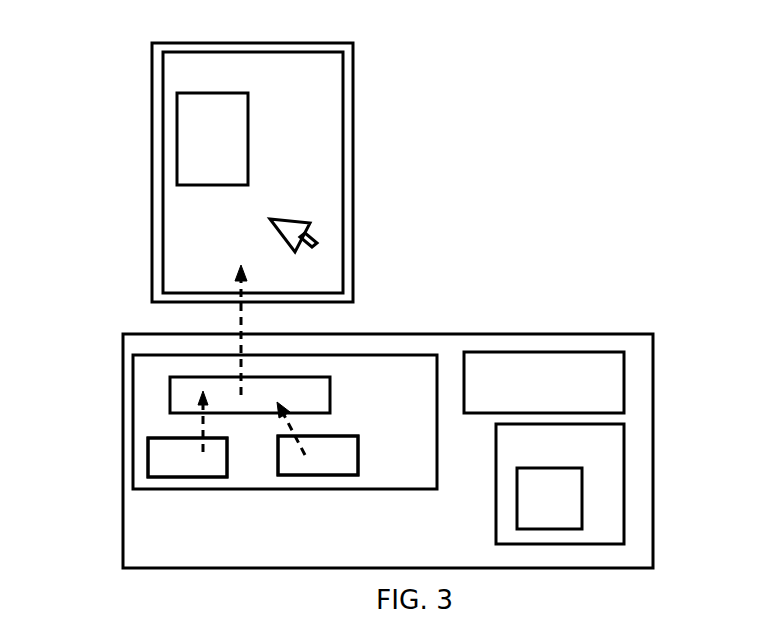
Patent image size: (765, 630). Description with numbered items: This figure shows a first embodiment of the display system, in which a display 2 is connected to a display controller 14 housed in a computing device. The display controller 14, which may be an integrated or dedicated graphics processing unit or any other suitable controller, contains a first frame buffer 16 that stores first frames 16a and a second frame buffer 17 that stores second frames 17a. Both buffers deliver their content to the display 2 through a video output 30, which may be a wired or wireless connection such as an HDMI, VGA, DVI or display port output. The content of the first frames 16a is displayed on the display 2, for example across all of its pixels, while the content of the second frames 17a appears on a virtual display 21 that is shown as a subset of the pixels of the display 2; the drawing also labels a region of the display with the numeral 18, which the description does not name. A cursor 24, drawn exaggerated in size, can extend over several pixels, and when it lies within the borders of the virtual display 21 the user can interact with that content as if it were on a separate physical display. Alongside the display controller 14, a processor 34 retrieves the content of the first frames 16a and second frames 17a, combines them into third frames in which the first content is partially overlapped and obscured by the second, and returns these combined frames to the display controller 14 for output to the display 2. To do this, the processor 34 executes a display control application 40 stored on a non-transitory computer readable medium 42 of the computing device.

The display 2 is at (190, 42).
The display screen 18 is at (285, 83).
The virtual display 21 is at (248, 147).
The cursor 24 is at (308, 222).
The display controller 14 is at (382, 338).
The processor 34 is at (565, 352).
The video output 30 is at (178, 392).
The first frame buffer 16 is at (180, 437).
The first frames 16a is at (155, 455).
The second frame buffer 17 is at (303, 472).
The second frames 17a is at (331, 458).
The non-transitory computer readable medium 42 is at (624, 449).
The display control application 40 is at (549, 498).